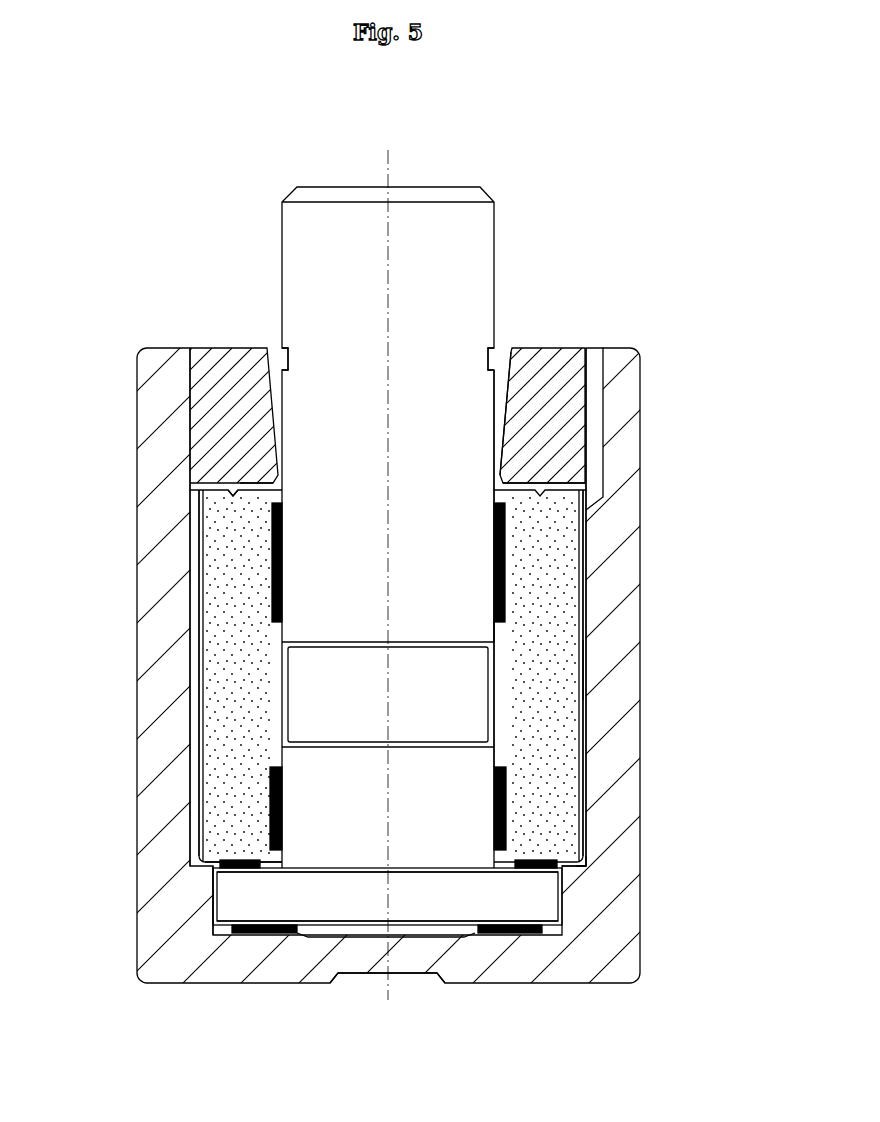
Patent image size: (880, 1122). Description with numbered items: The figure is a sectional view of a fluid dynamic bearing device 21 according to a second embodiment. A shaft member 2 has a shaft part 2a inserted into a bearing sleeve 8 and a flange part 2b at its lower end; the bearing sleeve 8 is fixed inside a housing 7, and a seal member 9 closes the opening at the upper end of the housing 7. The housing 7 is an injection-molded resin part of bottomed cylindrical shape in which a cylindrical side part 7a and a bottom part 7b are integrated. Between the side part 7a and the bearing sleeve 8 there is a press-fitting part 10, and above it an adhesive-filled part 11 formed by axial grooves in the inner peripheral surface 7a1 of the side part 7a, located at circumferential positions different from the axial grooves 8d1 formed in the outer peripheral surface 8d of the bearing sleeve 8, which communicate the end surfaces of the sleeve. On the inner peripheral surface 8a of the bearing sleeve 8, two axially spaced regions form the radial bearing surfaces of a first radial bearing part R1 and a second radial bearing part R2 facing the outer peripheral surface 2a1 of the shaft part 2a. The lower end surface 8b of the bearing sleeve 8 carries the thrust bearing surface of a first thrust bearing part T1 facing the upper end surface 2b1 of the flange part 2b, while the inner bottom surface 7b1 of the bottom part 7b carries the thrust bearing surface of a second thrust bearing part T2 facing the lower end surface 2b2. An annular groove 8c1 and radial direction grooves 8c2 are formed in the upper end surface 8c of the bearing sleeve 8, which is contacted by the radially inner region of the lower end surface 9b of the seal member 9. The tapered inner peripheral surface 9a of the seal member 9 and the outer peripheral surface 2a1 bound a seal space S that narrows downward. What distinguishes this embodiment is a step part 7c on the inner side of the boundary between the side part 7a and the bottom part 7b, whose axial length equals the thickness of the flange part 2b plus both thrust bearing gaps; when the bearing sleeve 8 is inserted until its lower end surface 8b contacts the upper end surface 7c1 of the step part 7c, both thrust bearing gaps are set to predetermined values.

The shaft member 2 is at (497, 192).
The shaft part 2a is at (480, 422).
The outer peripheral surface of shaft part 2a1 is at (495, 752).
The flange part 2b is at (535, 903).
The upper end surface of flange part 2b1 is at (462, 866).
The lower end surface of flange part 2b2 is at (442, 927).
The housing 7 is at (644, 360).
The side part 7a is at (625, 622).
The inner peripheral surface of side part 7a1 is at (197, 652).
The bottom part 7b is at (548, 957).
The inner bottom surface 7b1 is at (213, 912).
The step part 7c is at (565, 865).
The upper end surface of step part 7c1 is at (563, 870).
The bearing sleeve 8 is at (560, 556).
The inner peripheral surface of bearing sleeve 8a is at (497, 555).
The lower end surface of bearing sleeve 8b is at (215, 897).
The upper end surface of bearing sleeve 8c is at (195, 470).
The annular groove 8c1 is at (246, 487).
The radial direction grooves 8c2 is at (258, 478).
The outer peripheral surface of bearing sleeve 8d is at (592, 710).
The axial grooves 8d1 is at (197, 712).
The seal member 9 is at (565, 400).
The inner peripheral surface of seal member 9a is at (500, 445).
The lower end surface of seal member 9b is at (505, 492).
The press-fitting part 10 is at (590, 670).
The adhesive-filled part 11 is at (597, 440).
The fluid dynamic bearing device 21 is at (655, 240).
The first radial bearing part R1 is at (270, 560).
The second radial bearing part R2 is at (268, 797).
The first thrust bearing part T1 is at (255, 873).
The second thrust bearing part T2 is at (300, 922).
The seal space S is at (277, 370).